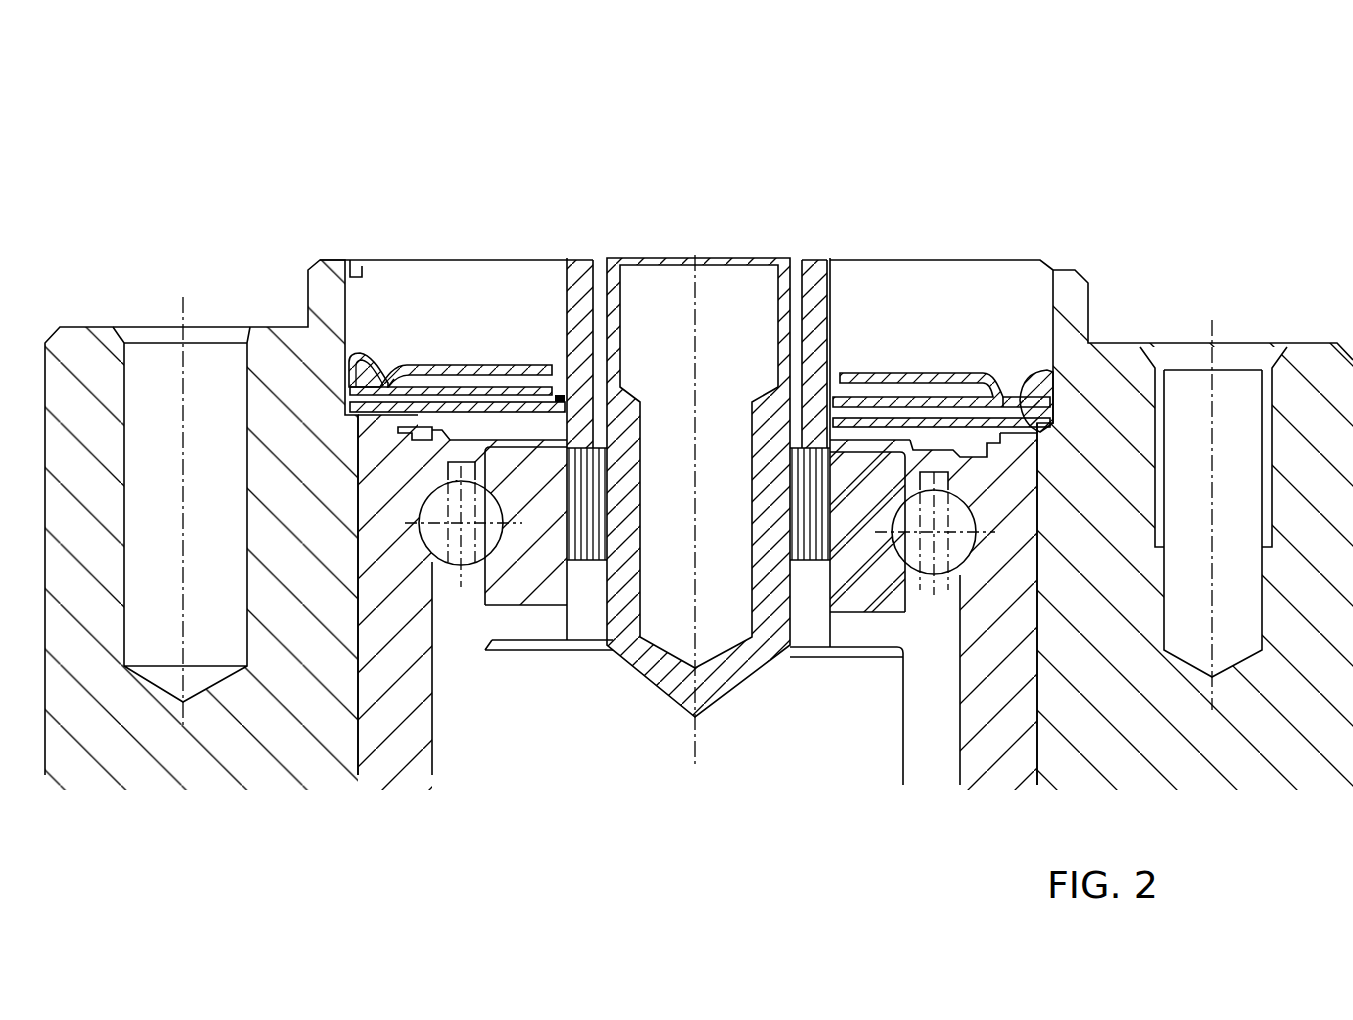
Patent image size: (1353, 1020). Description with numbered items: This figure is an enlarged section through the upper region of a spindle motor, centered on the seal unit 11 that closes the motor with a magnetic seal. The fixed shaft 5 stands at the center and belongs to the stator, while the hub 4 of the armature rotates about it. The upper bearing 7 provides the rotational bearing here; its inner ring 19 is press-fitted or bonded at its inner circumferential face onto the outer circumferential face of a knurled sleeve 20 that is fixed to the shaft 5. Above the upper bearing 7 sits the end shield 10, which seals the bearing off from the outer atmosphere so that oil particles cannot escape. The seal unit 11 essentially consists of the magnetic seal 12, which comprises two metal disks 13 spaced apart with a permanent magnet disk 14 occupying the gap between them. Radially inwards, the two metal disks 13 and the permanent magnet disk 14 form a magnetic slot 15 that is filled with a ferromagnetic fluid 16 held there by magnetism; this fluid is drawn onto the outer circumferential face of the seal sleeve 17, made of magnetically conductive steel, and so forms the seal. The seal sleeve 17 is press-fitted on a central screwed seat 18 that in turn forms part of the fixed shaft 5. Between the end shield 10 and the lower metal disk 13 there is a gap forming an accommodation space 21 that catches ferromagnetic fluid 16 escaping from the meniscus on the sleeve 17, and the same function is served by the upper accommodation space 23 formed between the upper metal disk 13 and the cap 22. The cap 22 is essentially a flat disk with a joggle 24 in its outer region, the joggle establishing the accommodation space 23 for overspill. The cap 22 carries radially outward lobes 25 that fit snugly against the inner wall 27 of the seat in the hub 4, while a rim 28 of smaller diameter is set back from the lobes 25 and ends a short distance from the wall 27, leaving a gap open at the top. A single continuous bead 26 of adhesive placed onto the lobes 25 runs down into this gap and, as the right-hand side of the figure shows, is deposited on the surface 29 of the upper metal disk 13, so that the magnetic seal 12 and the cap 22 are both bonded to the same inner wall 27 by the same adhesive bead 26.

The hub 4 is at (1310, 368).
The fixed shaft 5 is at (760, 526).
The upper bearing 7 is at (955, 545).
The end shield 10 is at (434, 440).
The seal unit 11 is at (877, 200).
The magnetic seal 12 is at (901, 405).
The metal disks 13 is at (938, 440).
The permanent magnet disk 14 is at (867, 378).
The slot 15 is at (562, 290).
The ferromagnetic fluid 16 is at (580, 354).
The seal sleeve 17 is at (814, 280).
The screwed seat 18 is at (677, 290).
The inner ring 19 is at (545, 593).
The knurled sleeve 20 is at (590, 548).
The accommodation space 21 is at (443, 428).
The cap 22 is at (488, 365).
The upper accommodation space 23 is at (520, 380).
The joggle 24 is at (417, 365).
The lobes 25 is at (387, 360).
The bead of adhesive 26 is at (1033, 372).
The wall 27 is at (360, 262).
The rim 28 is at (1020, 383).
The surface 29 is at (1050, 362).